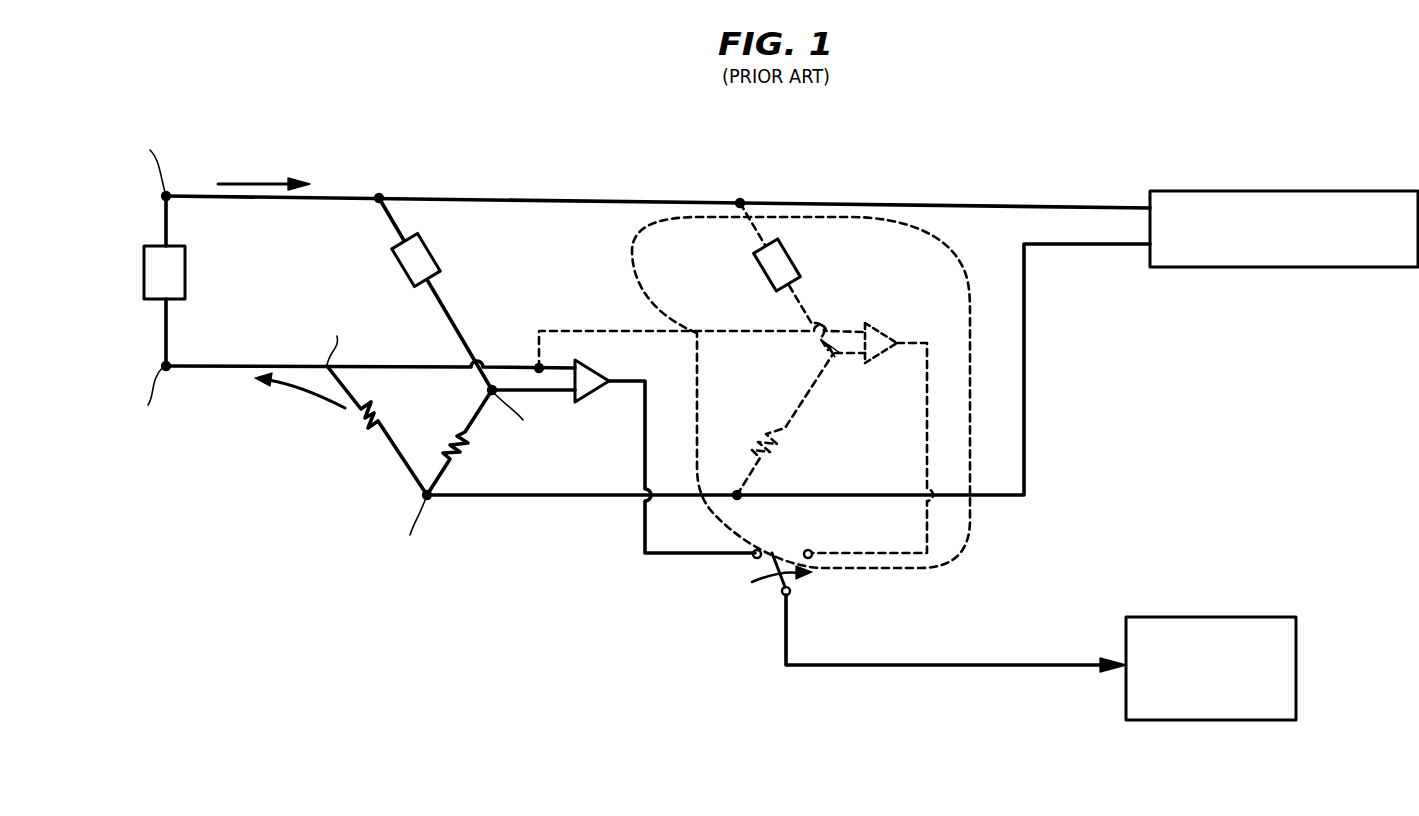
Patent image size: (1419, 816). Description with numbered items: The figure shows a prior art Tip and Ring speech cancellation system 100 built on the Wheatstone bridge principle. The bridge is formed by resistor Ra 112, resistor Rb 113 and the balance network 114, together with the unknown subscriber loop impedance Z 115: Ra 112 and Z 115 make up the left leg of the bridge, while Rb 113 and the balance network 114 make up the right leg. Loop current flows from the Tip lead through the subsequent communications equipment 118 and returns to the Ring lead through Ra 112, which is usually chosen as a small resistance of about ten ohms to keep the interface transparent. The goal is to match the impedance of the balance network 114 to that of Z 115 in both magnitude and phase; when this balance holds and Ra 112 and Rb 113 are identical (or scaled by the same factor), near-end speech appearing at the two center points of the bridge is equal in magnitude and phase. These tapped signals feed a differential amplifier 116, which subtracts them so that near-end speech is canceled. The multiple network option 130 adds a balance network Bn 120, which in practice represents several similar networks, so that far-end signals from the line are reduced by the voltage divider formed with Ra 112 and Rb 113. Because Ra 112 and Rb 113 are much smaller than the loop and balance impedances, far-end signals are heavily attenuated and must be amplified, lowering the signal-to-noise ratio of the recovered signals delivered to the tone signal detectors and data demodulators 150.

The Tip and Ring speech cancellation system 100 is at (637, 144).
The resistor Ra 112 is at (372, 430).
The resistor Rb 113 is at (455, 445).
The balance network R3 114 is at (430, 250).
The impedance Z 115 is at (185, 275).
The differential amplifier 116 is at (597, 396).
The subsequent communications equipment 118 is at (1325, 191).
The balance network Bn 120 is at (755, 268).
The multiple network option 130 is at (900, 240).
The tone signal detectors and data demodulators 150 is at (1245, 617).